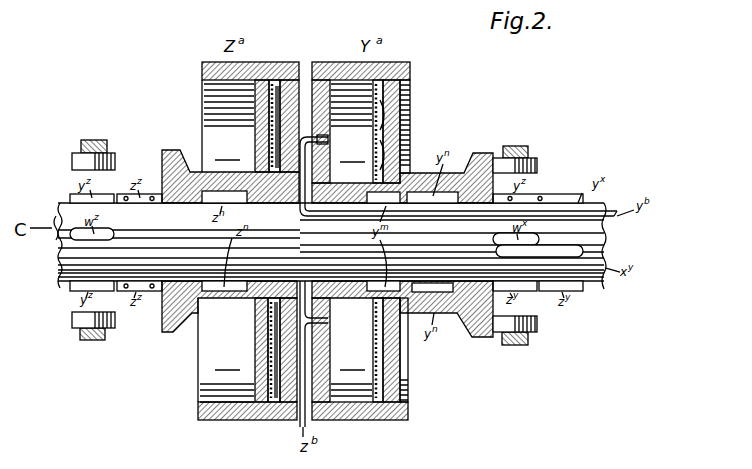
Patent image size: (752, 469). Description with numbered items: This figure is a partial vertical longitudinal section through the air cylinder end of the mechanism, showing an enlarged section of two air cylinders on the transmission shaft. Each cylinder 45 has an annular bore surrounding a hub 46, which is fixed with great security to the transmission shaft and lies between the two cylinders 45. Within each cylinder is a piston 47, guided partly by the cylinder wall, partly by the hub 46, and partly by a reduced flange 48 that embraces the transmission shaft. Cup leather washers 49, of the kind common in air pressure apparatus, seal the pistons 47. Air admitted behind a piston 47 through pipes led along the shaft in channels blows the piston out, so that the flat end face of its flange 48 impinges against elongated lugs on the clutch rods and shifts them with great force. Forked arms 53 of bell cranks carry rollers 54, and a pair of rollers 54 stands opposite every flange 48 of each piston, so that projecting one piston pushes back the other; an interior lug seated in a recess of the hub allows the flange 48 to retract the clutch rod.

The cylinder 45 is at (274, 64).
The hub 46 is at (302, 216).
The piston 47 is at (258, 116).
The reduced flange 48 is at (168, 165).
The cup leather washer 49 is at (272, 138).
The forked arm 53 is at (82, 145).
The roller 54 is at (94, 160).